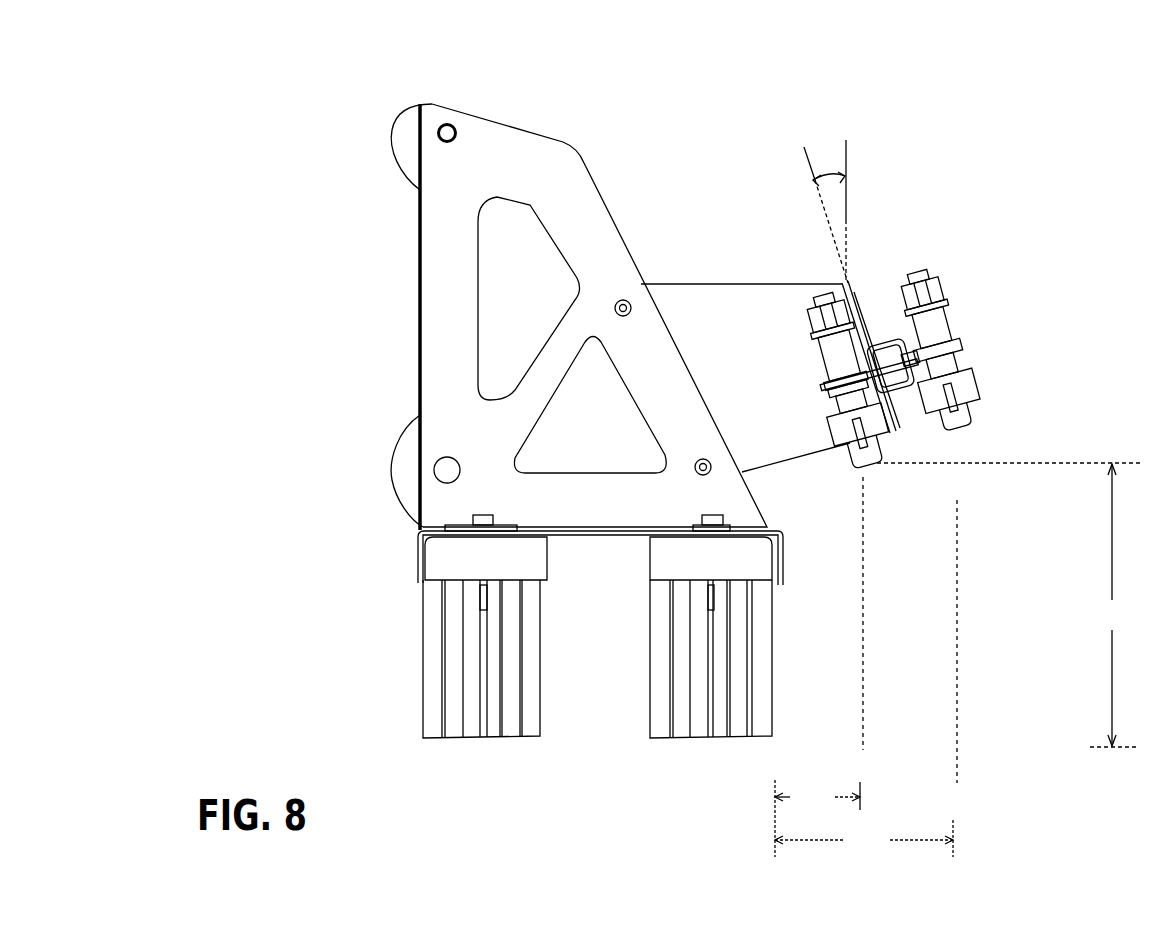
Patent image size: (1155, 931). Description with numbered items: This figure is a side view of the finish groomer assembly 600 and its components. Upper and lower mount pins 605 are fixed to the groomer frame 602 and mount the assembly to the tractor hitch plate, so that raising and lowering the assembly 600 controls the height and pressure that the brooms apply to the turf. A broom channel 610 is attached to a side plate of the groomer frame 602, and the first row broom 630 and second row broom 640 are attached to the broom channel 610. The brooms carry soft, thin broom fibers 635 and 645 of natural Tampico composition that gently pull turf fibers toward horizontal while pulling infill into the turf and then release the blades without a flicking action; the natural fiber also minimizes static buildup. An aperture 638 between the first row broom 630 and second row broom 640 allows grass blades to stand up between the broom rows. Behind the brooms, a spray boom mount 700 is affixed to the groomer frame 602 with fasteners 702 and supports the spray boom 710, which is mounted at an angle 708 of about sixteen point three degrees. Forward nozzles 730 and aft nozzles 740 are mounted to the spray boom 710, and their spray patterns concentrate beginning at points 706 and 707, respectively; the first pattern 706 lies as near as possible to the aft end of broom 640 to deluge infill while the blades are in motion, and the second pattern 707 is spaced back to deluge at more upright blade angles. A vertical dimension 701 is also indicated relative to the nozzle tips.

The finish groomer assembly 600 is at (710, 77).
The groomer frame 602 is at (516, 147).
The mount pins 605 is at (438, 133).
The broom channel 610 is at (418, 557).
The first row broom 630 is at (487, 562).
The broom fibers 635 is at (435, 698).
The second row broom 640 is at (708, 555).
The broom fibers 645 is at (665, 692).
The aperture 638 is at (652, 775).
The spray boom mount 700 is at (747, 320).
The fasteners 702 is at (621, 316).
The angle 708 is at (830, 177).
The spray boom 710 is at (880, 327).
The forward nozzles 730 is at (877, 453).
The aft nozzles 740 is at (957, 422).
The nozzle height 701 is at (1010, 605).
The first row nozzle pattern 706 is at (819, 667).
The second row nozzle pattern 707 is at (866, 678).